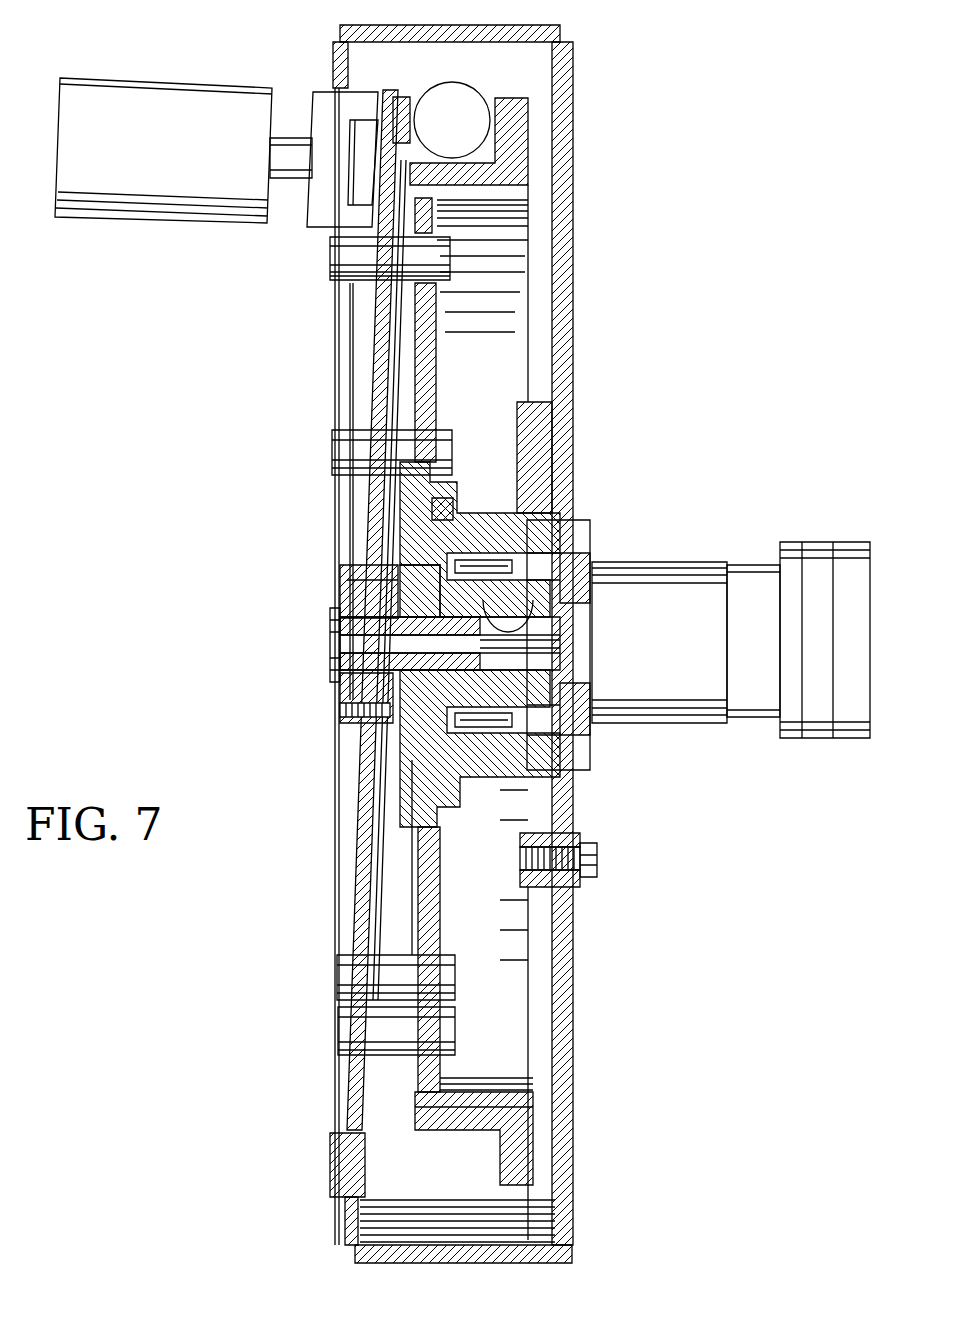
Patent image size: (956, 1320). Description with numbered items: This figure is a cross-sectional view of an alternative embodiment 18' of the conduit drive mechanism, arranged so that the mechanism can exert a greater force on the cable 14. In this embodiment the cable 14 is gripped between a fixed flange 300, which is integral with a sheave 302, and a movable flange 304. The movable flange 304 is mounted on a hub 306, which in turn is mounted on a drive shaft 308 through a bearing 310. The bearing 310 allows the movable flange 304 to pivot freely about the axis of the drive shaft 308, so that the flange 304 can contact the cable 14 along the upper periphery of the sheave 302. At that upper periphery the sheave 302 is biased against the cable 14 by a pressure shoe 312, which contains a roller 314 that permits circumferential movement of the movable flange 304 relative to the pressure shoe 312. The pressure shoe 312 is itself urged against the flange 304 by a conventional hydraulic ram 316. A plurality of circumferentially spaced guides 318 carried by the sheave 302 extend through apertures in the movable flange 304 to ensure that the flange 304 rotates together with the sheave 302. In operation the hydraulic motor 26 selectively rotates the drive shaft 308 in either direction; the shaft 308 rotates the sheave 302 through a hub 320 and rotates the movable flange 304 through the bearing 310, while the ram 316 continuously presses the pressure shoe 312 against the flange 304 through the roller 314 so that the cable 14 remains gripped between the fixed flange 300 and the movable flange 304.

The cable 14 is at (488, 97).
The alternative embodiment of the conduit drive mechanism 18' is at (513, 644).
The hydraulic motor 26 is at (661, 575).
The fixed flange 300 is at (530, 160).
The sheave 302 is at (428, 400).
The movable flange 304 is at (408, 97).
The hub 306 is at (335, 712).
The drive shaft 308 is at (340, 660).
The bearing 310 is at (365, 612).
The pressure shoe 312 is at (317, 108).
The roller 314 is at (352, 198).
The hydraulic ram 316 is at (177, 198).
The guides 318 is at (343, 263).
The hub 320 is at (427, 598).